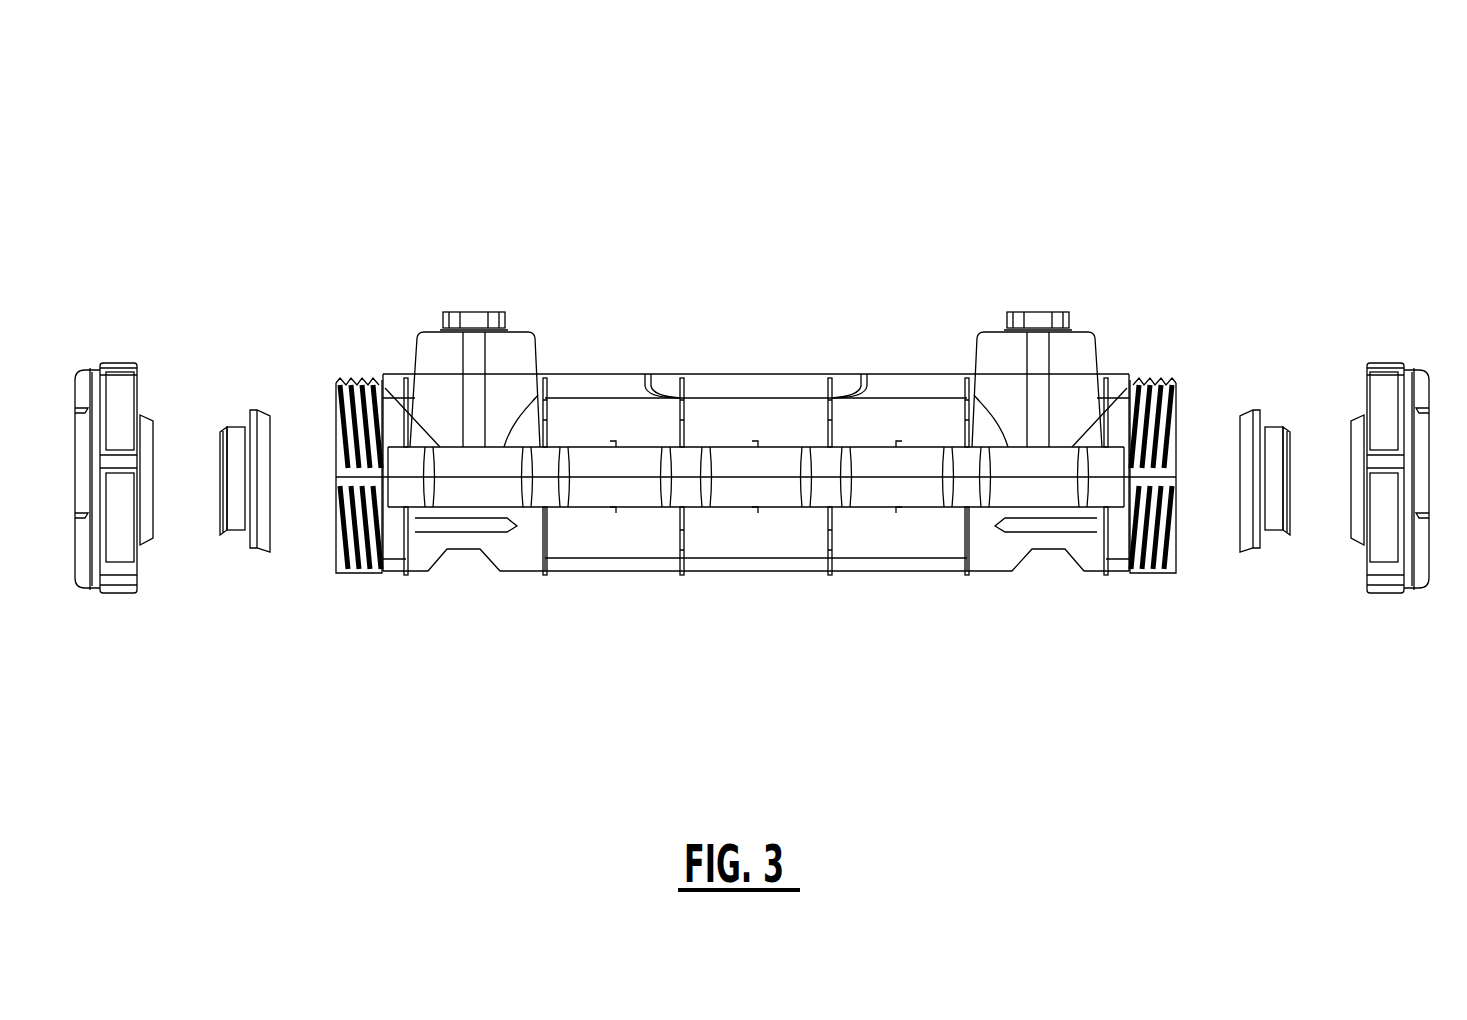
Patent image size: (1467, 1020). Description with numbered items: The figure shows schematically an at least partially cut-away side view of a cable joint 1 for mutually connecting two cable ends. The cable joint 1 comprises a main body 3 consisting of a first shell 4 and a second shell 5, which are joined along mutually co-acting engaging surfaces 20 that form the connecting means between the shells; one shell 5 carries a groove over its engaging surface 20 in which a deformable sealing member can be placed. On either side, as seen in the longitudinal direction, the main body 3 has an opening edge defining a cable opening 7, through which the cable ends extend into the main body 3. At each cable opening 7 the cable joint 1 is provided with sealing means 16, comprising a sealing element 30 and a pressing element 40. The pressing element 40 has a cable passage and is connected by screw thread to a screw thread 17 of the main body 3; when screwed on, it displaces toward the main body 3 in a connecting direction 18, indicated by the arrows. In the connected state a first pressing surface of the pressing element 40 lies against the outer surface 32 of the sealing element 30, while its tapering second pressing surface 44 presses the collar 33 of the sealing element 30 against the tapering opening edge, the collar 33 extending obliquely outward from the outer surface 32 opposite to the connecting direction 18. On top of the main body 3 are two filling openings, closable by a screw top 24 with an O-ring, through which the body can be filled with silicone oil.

The cable joint 1 is at (185, 150).
The main body 3 is at (682, 262).
The first shell 4 is at (755, 374).
The second shell 5 is at (785, 571).
The cable opening 7 is at (312, 526).
The sealing means 16 is at (188, 610).
The screw thread 17 is at (352, 382).
The connecting direction 18 is at (207, 743).
The engaging surface 20 is at (404, 497).
The screw top 24 is at (467, 312).
The sealing element 30 is at (240, 430).
The outer surface 32 is at (256, 425).
The collar 33 is at (272, 420).
The pressing element 40 is at (120, 372).
The second pressing surface 44 is at (143, 420).